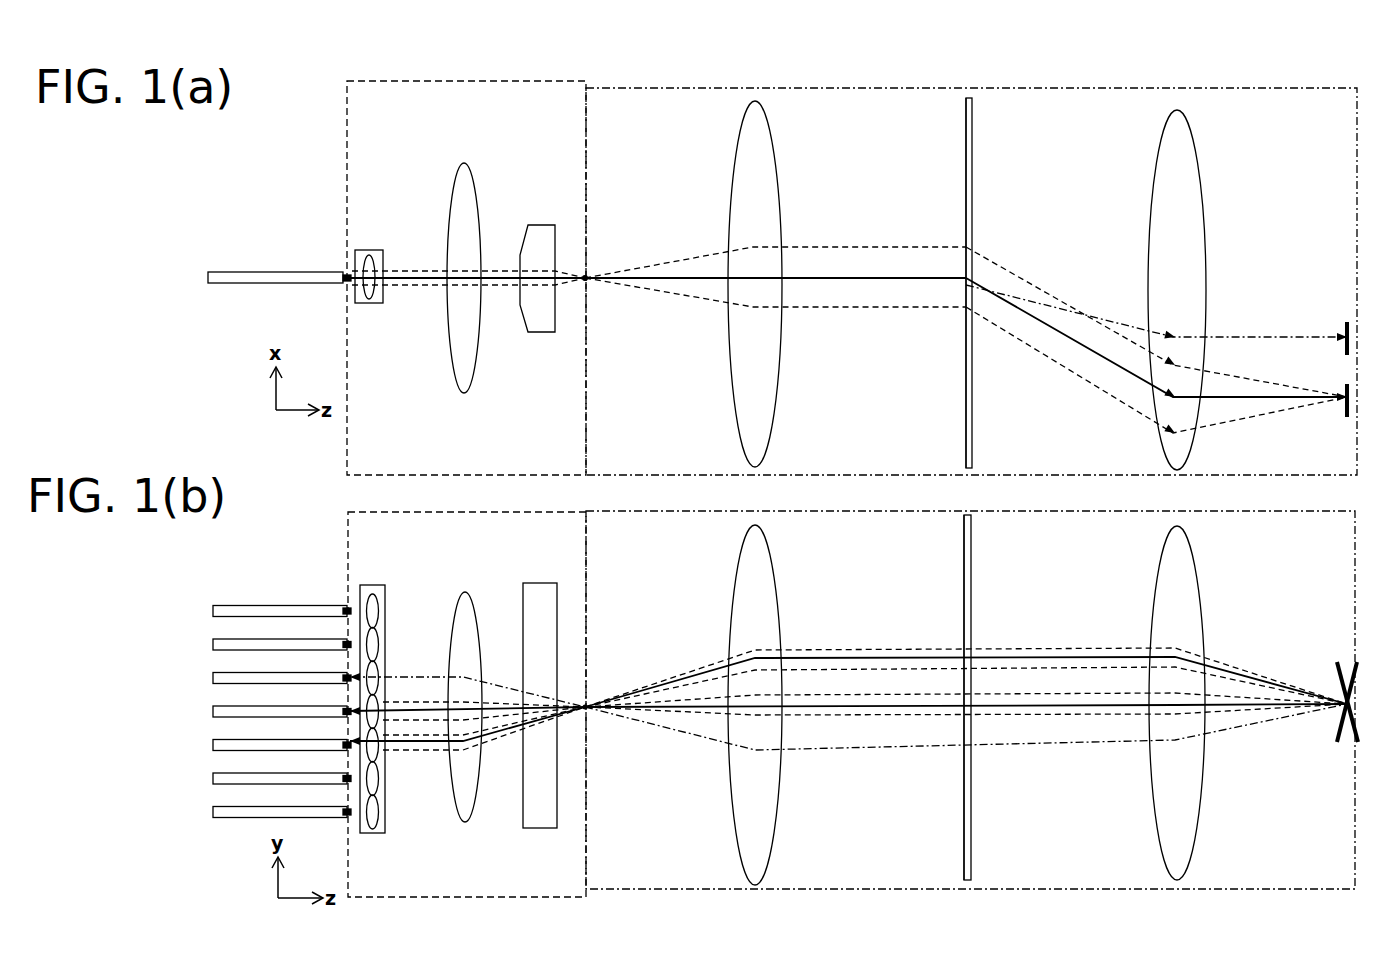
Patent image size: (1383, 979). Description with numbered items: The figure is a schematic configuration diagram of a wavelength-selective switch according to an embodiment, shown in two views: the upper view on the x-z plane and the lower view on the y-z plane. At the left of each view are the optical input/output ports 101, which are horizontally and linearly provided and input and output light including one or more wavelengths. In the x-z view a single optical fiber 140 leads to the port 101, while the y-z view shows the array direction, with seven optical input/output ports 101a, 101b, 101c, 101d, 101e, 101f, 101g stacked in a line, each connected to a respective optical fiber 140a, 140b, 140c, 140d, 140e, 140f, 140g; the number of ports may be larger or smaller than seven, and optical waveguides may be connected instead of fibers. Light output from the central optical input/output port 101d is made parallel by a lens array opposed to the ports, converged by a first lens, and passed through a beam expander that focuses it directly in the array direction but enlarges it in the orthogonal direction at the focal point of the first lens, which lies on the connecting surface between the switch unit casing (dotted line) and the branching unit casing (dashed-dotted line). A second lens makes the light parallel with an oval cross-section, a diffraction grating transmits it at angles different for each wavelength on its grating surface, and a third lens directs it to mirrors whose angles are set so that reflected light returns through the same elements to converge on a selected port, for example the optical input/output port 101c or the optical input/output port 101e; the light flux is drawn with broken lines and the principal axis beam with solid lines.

The optical input/output port 101 is at (344, 277).
The optical input/output port 101a is at (344, 610).
The optical input/output port 101b is at (344, 643).
The optical input/output port 101c is at (344, 677).
The optical input/output port 101d is at (344, 710).
The optical input/output port 101e is at (344, 744).
The optical input/output port 101f is at (344, 777).
The optical input/output port 101g is at (344, 811).
The optical fiber 140 is at (246, 272).
The optical fiber 140a is at (228, 606).
The optical fiber 140b is at (228, 639).
The optical fiber 140c is at (228, 672).
The optical fiber 140d is at (228, 706).
The optical fiber 140e is at (228, 740).
The optical fiber 140f is at (228, 773).
The optical fiber 140g is at (228, 806).